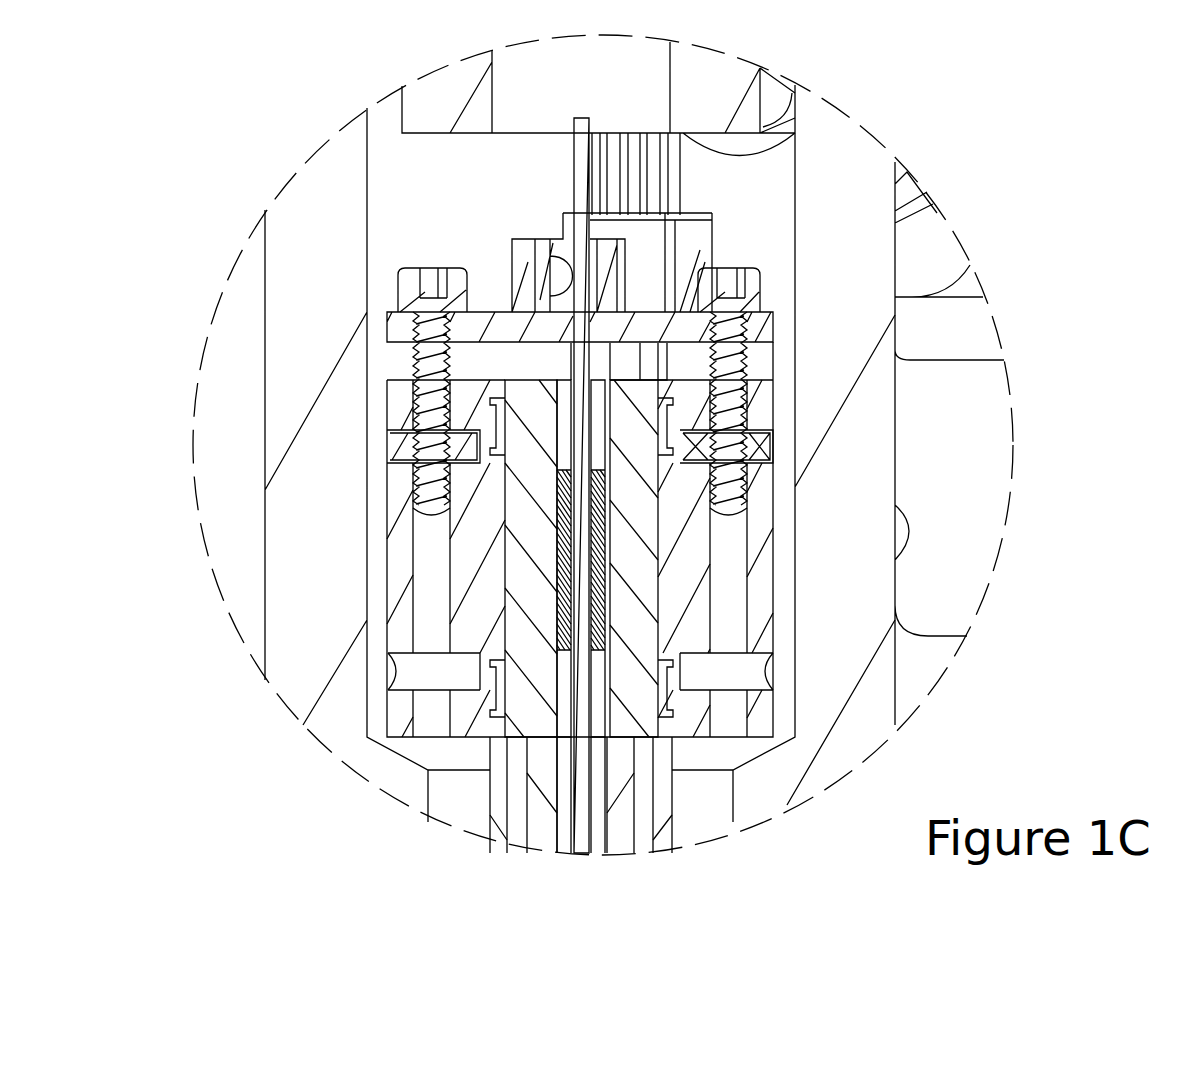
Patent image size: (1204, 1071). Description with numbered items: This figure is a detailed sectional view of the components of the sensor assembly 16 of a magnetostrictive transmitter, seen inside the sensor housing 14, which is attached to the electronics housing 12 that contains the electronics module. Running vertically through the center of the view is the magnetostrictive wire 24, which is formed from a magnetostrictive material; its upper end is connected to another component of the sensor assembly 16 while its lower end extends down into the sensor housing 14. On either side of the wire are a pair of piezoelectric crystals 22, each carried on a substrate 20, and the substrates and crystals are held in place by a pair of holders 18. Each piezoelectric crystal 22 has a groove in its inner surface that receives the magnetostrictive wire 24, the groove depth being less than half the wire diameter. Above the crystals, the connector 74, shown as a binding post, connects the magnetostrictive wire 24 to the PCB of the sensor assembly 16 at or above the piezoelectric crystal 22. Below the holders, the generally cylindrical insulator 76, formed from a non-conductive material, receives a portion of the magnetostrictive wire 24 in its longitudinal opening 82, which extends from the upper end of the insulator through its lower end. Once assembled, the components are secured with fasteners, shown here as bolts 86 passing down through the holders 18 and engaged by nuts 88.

The electronics housing 12 is at (986, 428).
The sensor housing 14 is at (322, 200).
The sensor assembly 16 is at (597, 82).
The holder 18 is at (385, 617).
The substrate 20 is at (503, 578).
The piezoelectric crystal 22 is at (556, 533).
The magnetostrictive wire 24 is at (571, 177).
The connector 74 is at (533, 270).
The insulator 76 is at (528, 833).
The longitudinal opening 82 is at (597, 840).
The bolt 86 is at (397, 292).
The nut 88 is at (386, 447).